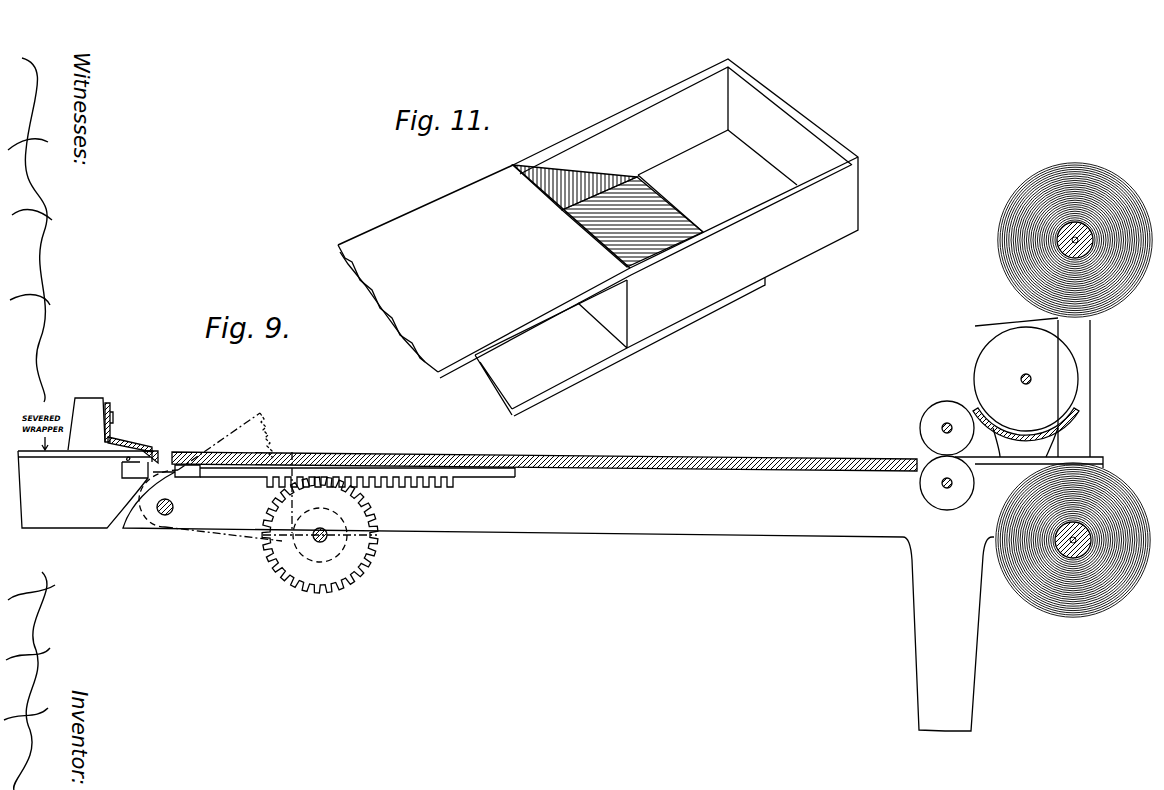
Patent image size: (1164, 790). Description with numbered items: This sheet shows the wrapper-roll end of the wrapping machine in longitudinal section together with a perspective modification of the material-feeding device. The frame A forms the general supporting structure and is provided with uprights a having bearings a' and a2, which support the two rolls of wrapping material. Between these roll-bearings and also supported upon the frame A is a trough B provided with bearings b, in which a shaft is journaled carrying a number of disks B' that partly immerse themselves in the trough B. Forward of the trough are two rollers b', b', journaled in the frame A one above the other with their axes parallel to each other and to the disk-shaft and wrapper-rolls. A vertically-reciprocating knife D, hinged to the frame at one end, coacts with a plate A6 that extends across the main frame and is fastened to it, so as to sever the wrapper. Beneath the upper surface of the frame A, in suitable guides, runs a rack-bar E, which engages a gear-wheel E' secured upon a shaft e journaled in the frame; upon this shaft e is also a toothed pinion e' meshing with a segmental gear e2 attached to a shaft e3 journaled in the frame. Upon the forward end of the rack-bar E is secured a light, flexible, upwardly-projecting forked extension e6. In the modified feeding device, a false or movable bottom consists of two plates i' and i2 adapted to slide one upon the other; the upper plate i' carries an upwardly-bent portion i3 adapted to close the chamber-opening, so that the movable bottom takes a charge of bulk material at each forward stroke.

In FIG. 9, the frame A is at (613, 524).
In FIG. 9, the plate A6 is at (113, 436).
In FIG. 9, the knife D is at (110, 405).
In FIG. 9, the forked extension e6 is at (122, 454).
In FIG. 9, the rack-bar E is at (357, 490).
In FIG. 9, the gear-wheel E' is at (330, 522).
In FIG. 9, the shaft e is at (319, 525).
In FIG. 9, the toothed pinion e' is at (320, 546).
In FIG. 9, the segmental gear e2 is at (225, 441).
In FIG. 9, the shaft e3 is at (173, 507).
In FIG. 9, the rollers b' is at (937, 452).
In FIG. 9, the disks B' is at (1026, 379).
In FIG. 9, the bearings b is at (1036, 373).
In FIG. 9, the trough B is at (1026, 432).
In FIG. 9, the uprights a is at (1086, 388).
In FIG. 9, the bearing a' is at (1075, 240).
In FIG. 9, the bearing a2 is at (1078, 540).
In FIG. 11, the upper plate i' is at (484, 268).
In FIG. 11, the lower plate i2 is at (620, 347).
In FIG. 11, the upwardly-bent portion i3 is at (602, 314).